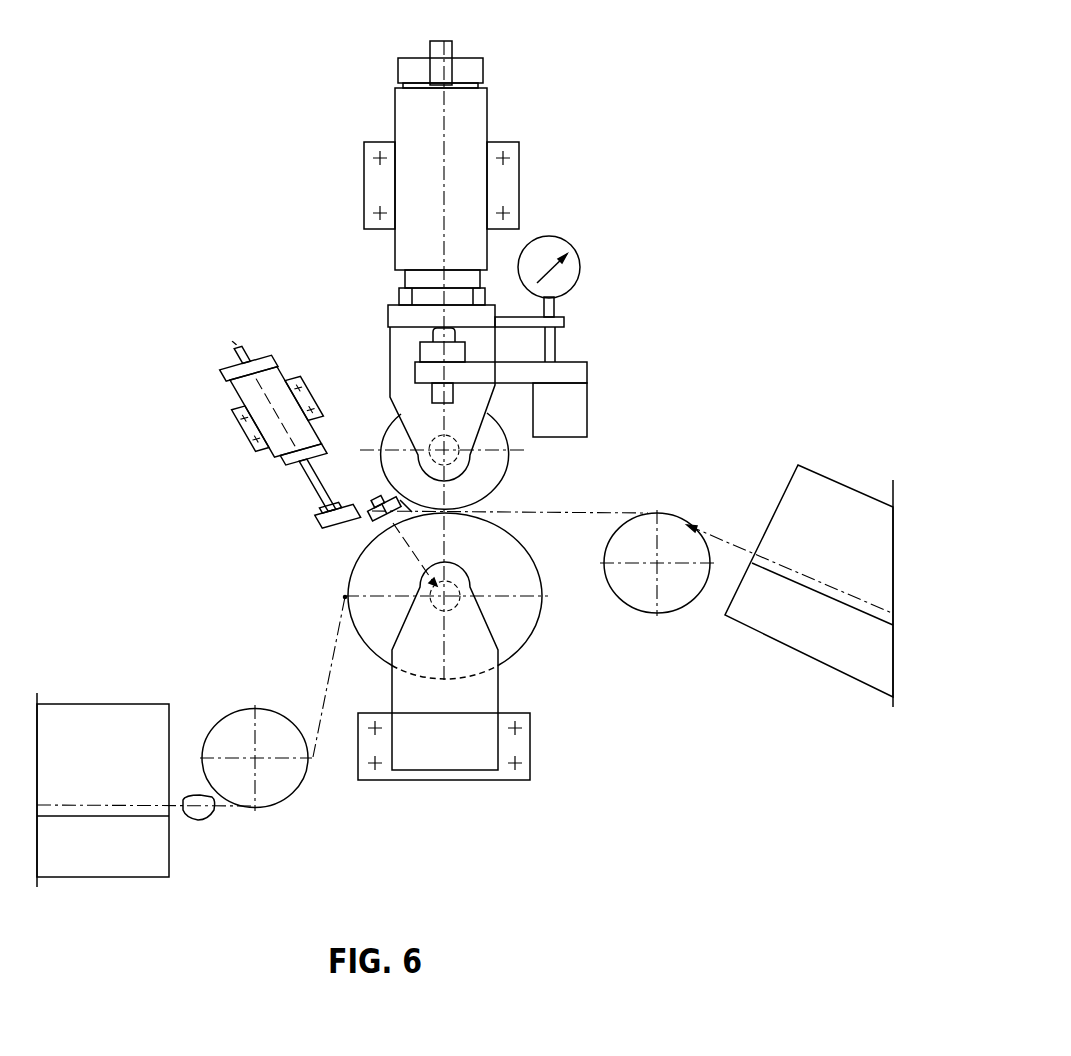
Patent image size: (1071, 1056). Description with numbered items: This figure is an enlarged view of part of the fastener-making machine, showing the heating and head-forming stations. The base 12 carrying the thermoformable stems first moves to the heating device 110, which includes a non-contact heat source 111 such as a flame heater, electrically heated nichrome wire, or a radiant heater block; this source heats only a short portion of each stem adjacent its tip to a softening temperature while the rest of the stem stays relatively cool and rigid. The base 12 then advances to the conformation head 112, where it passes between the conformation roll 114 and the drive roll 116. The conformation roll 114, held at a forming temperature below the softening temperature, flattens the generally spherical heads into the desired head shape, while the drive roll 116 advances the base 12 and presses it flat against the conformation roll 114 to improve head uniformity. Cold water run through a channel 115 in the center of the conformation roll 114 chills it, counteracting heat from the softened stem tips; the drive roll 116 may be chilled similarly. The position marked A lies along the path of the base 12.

The heating device 110 is at (155, 348).
The non-contact heat source 111 is at (395, 512).
The conformation head 112 is at (641, 285).
The conformation roll 114 is at (507, 475).
The channel 115 is at (455, 447).
The drive roll 116 is at (516, 623).
The base 12 is at (322, 708).
The point A is at (200, 820).